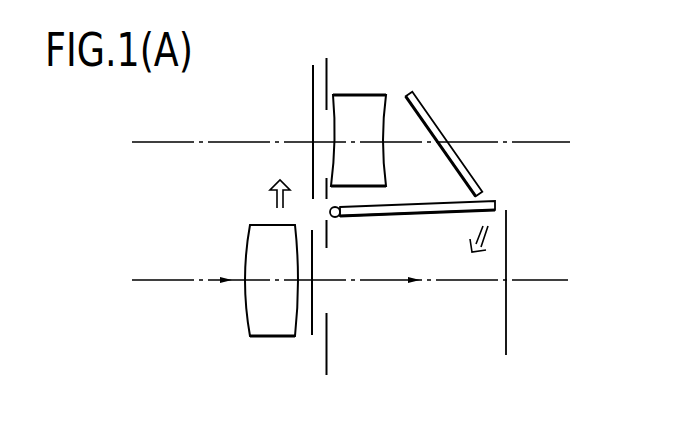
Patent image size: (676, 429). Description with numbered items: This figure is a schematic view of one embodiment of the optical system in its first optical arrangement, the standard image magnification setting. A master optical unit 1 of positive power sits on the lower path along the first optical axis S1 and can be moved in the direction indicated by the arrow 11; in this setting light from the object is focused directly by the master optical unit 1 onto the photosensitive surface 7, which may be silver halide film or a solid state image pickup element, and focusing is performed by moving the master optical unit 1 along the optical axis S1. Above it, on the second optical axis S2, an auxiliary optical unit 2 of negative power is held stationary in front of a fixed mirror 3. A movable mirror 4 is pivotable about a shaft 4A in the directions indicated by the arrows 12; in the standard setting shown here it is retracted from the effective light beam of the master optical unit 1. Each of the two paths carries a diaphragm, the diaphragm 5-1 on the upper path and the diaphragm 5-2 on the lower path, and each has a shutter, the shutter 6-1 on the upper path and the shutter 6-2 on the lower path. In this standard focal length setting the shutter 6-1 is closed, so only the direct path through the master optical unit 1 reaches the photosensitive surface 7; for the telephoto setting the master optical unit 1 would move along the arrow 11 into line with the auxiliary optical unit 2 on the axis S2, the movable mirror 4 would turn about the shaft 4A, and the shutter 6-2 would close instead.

The master optical unit 1 is at (260, 335).
The auxiliary optical unit 2 is at (356, 95).
The fixed mirror 3 is at (431, 112).
The movable mirror 4 is at (494, 200).
The shaft 4A is at (338, 217).
The diaphragm 5-1 is at (327, 58).
The diaphragm 5-2 is at (327, 362).
The shutter 6-1 is at (313, 80).
The shutter 6-2 is at (312, 329).
The photosensitive surface 7 is at (507, 337).
The arrow 11 is at (275, 197).
The arrows 12 is at (470, 236).
The first optical axis S1 is at (383, 283).
The second optical axis S2 is at (400, 143).